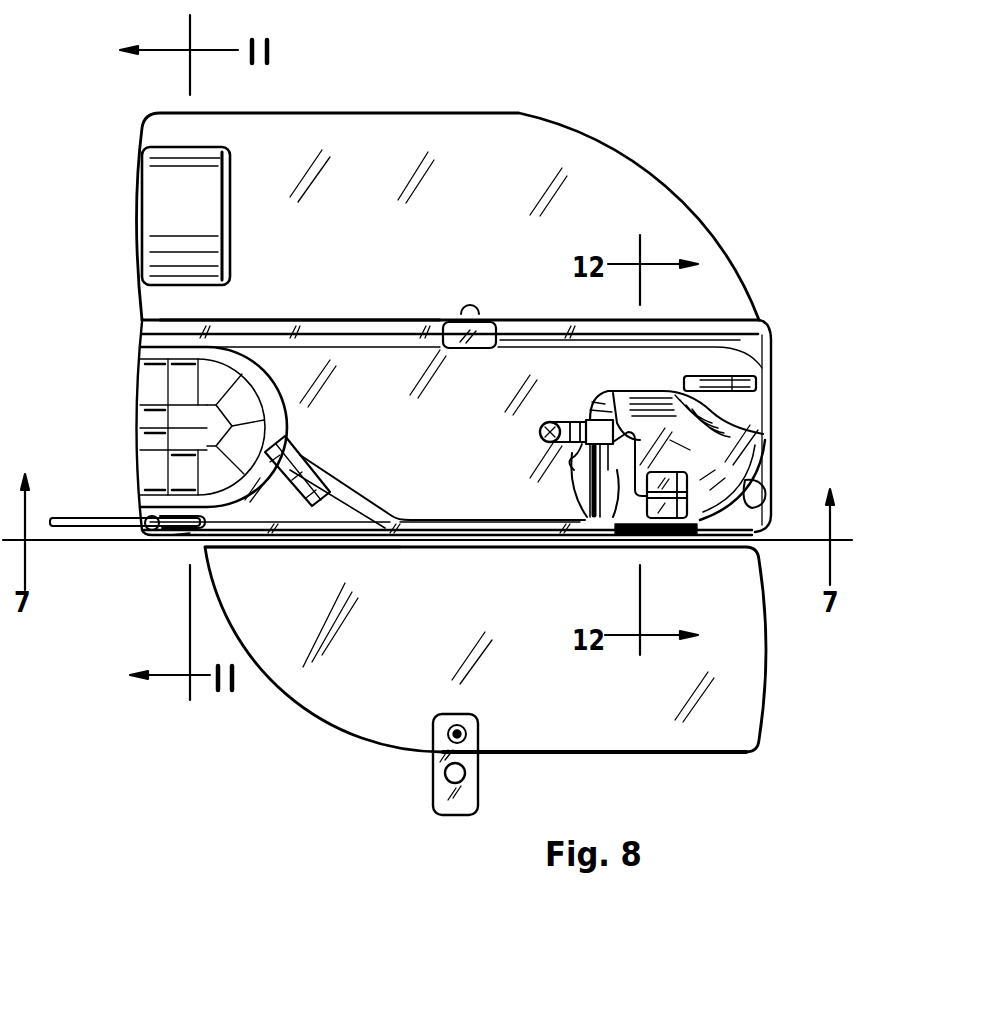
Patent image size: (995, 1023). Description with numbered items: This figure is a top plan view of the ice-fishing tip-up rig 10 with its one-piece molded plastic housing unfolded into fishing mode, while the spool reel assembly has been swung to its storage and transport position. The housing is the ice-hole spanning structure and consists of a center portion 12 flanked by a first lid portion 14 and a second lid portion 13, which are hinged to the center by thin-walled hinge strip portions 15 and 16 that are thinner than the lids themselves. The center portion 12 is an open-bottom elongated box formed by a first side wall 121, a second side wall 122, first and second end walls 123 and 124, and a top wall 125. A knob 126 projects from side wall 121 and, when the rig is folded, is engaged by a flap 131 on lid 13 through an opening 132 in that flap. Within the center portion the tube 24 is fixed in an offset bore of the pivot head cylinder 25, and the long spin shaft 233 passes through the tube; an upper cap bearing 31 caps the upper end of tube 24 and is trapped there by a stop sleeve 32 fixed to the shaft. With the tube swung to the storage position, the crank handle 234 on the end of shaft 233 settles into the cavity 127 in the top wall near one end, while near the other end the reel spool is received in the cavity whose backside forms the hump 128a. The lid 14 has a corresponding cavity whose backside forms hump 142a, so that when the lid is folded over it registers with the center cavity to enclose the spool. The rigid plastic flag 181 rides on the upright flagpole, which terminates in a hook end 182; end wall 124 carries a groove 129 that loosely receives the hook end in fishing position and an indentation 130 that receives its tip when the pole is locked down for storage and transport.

The latch assembly 10 is at (698, 187).
The center portion 12 is at (763, 354).
The second lid portion 13 is at (350, 708).
The first lid portion 14 is at (700, 246).
The hinge strip portion 15 is at (390, 548).
The hinge strip portion 16 is at (346, 320).
The tube 24 is at (553, 430).
The pivot head cylinder 25 is at (574, 456).
The upper cap bearing 31 is at (590, 420).
The stop sleeve 32 is at (615, 393).
The first side wall 121 is at (659, 321).
The second side wall 122 is at (322, 548).
The first end wall 123 is at (148, 360).
The second end wall 124 is at (773, 462).
The top wall 125 is at (483, 472).
The knob 126 is at (470, 313).
The cavity 127 is at (740, 446).
The hump 128a is at (234, 404).
The groove 129 is at (757, 388).
The indentation 130 is at (770, 492).
The flap 131 is at (440, 792).
The opening 132 is at (462, 783).
The hump 142a is at (175, 200).
The flag 181 is at (98, 518).
The hook end 182 is at (192, 540).
The spin shaft 233 is at (610, 537).
The crank handle 234 is at (664, 537).